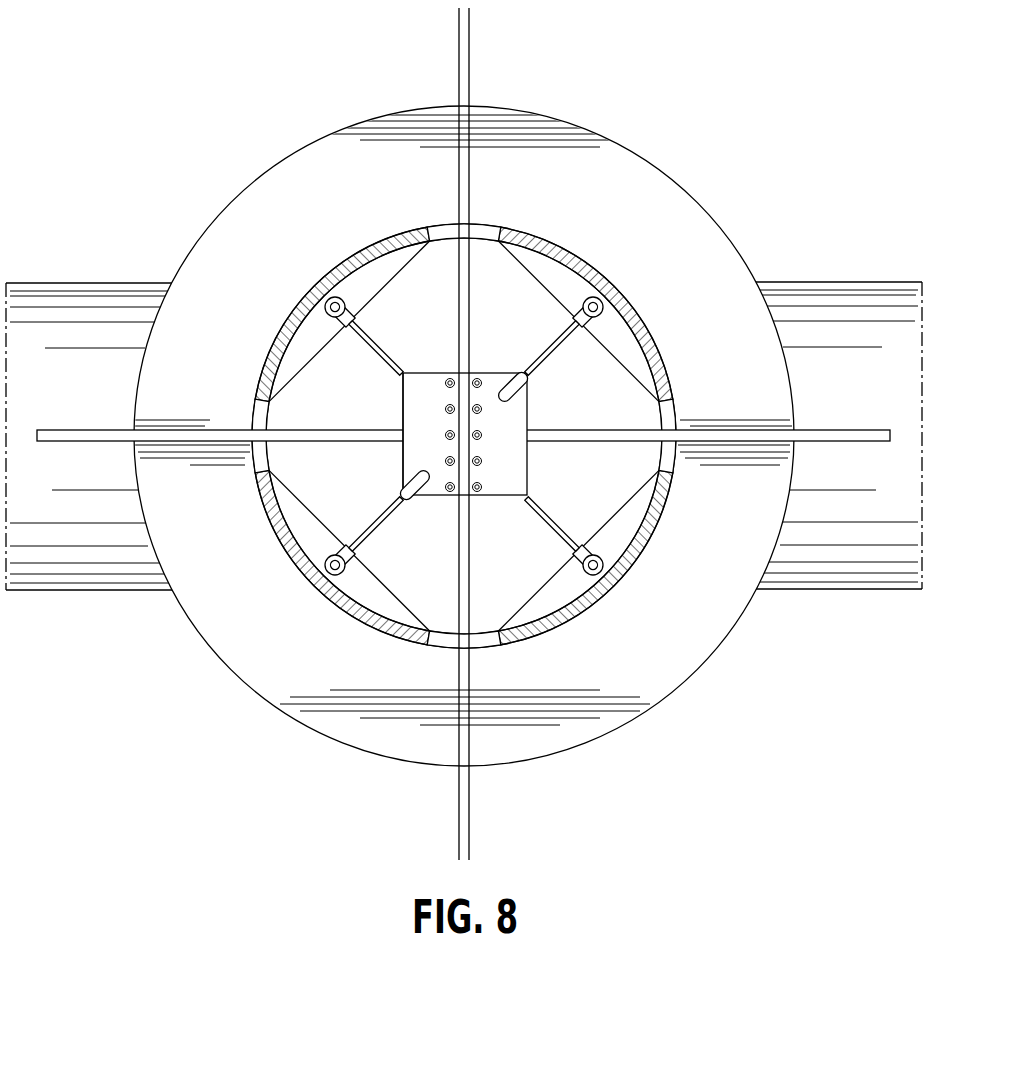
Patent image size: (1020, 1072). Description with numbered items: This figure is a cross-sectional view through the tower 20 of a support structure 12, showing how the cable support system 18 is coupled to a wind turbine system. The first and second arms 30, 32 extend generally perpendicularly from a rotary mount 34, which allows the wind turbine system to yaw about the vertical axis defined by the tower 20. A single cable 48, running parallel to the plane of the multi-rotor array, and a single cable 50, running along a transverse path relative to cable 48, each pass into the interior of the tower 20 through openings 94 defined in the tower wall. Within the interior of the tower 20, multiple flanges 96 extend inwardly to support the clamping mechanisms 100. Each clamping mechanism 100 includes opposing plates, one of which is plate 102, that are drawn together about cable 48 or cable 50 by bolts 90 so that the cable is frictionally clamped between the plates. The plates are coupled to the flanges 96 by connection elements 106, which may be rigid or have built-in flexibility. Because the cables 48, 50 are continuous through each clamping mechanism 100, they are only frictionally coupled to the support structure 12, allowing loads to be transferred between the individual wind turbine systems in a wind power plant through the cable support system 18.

The support structure 12 is at (456, 429).
The cable support system 18 is at (53, 424).
The tower 20 is at (617, 285).
The first arm 30 is at (60, 281).
The second arm 32 is at (862, 280).
The rotary mount 34 is at (731, 236).
The cable 48 is at (88, 429).
The cable 50 is at (470, 30).
The bolts 90 is at (480, 379).
The openings 94 is at (447, 225).
The flanges 96 is at (285, 388).
The clamping mechanism 100 is at (400, 392).
The plate 102 is at (401, 455).
The connection elements 106 is at (381, 350).